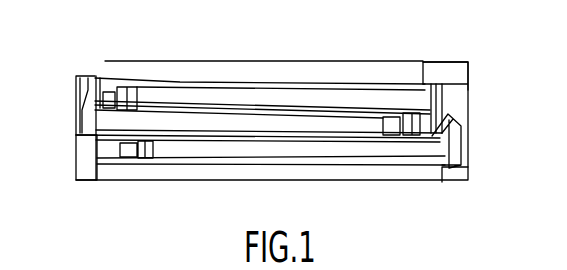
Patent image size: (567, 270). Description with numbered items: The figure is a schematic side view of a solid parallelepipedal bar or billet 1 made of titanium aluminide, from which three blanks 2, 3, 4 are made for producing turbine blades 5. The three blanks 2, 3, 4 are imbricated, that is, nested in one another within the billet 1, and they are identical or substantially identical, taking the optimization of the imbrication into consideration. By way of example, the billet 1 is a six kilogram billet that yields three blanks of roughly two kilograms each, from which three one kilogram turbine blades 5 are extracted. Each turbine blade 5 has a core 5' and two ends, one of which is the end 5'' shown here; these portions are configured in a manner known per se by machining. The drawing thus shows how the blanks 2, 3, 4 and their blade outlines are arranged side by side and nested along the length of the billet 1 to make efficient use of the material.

The billet 1 is at (481, 112).
The blank 2 is at (453, 88).
The blank 3 is at (74, 90).
The blank 4 is at (458, 174).
The turbine blade 5 is at (260, 123).
The core 5' is at (65, 148).
The end 5'' is at (136, 178).